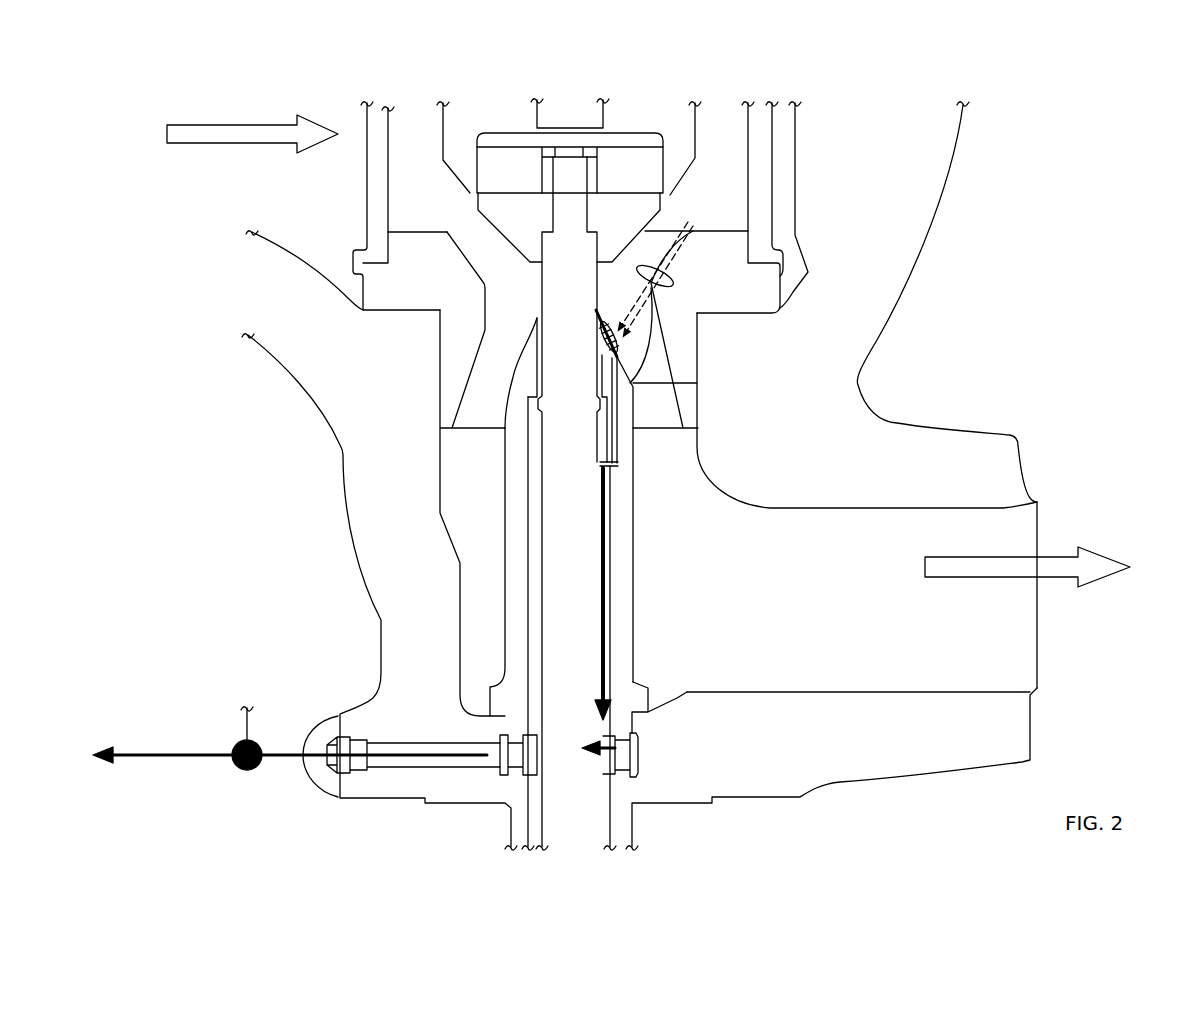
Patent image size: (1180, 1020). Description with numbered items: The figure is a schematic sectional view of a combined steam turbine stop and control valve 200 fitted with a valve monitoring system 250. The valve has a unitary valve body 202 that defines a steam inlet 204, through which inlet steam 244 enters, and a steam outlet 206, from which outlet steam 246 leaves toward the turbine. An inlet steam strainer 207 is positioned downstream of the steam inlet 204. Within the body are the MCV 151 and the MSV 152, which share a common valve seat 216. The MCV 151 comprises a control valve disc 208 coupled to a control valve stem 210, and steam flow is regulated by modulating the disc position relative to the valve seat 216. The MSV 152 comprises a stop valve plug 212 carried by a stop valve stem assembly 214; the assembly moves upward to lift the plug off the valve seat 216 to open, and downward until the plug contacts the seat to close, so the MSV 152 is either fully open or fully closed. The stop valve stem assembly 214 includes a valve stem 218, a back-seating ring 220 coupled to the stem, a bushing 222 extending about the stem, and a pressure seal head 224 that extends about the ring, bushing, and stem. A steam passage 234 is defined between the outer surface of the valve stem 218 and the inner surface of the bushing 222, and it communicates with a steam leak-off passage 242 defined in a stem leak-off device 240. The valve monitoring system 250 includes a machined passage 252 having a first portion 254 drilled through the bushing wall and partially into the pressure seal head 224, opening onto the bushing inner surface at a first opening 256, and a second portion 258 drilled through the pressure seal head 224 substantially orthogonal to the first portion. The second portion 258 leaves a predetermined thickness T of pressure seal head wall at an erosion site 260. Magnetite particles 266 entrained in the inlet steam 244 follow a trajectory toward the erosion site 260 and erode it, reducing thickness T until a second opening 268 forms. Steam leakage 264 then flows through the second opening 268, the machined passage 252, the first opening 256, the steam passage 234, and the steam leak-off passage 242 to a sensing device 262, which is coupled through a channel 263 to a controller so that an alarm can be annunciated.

The MCV 151 is at (524, 120).
The MSV 152 is at (526, 277).
The combined steam turbine stop and control valve 200 is at (816, 147).
The unitary valve body 202 is at (855, 312).
The steam inlet 204 is at (288, 188).
The steam outlet 206 is at (913, 579).
The inlet steam strainer 207 is at (433, 145).
The control valve disc 208 is at (520, 175).
The control valve stem 210 is at (587, 120).
The stop valve plug 212 is at (535, 227).
The stop valve stem assembly 214 is at (499, 376).
The valve seat 216 is at (438, 263).
The valve stem 218 is at (587, 264).
The back-seating ring 220 is at (527, 408).
The bushing 222 is at (530, 477).
The pressure seal head 224 is at (515, 525).
The steam passage 234 is at (608, 634).
The stem leak-off device 240 is at (347, 707).
The steam leak-off passage 242 is at (406, 749).
The inlet steam 244 is at (212, 135).
The outlet steam 246 is at (1102, 570).
The valve monitoring system 250 is at (625, 582).
The machined passage 252 is at (633, 462).
The first portion 254 is at (620, 470).
The first opening 256 is at (600, 457).
The second portion 258 is at (620, 422).
The erosion site 260 is at (596, 310).
The sensing device 262 is at (236, 742).
The channel 263 is at (245, 715).
The steam leakage 264 is at (605, 685).
The magnetite particles 266 is at (670, 279).
The second opening 268 is at (632, 378).
The thickness T is at (626, 351).